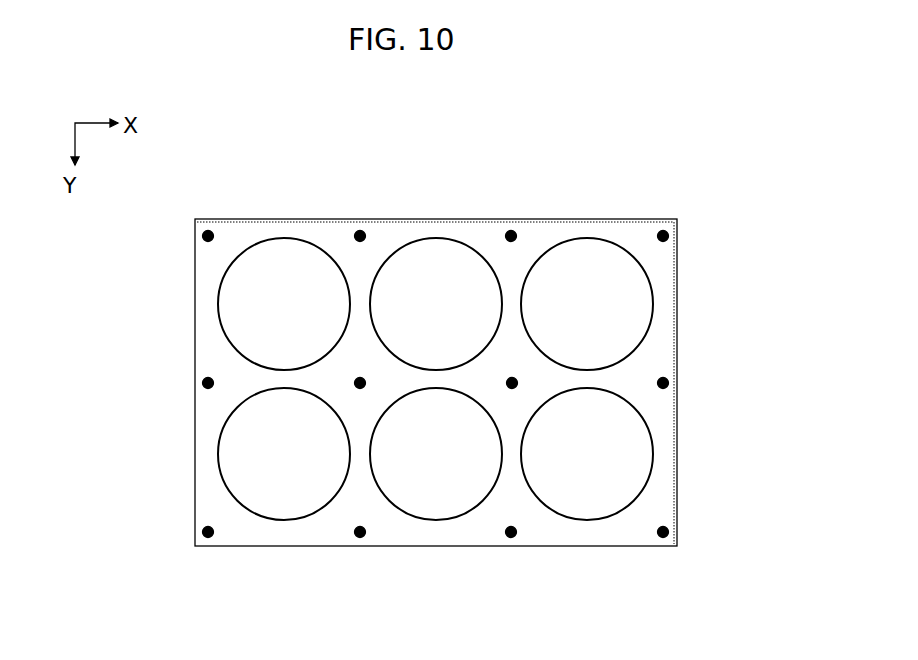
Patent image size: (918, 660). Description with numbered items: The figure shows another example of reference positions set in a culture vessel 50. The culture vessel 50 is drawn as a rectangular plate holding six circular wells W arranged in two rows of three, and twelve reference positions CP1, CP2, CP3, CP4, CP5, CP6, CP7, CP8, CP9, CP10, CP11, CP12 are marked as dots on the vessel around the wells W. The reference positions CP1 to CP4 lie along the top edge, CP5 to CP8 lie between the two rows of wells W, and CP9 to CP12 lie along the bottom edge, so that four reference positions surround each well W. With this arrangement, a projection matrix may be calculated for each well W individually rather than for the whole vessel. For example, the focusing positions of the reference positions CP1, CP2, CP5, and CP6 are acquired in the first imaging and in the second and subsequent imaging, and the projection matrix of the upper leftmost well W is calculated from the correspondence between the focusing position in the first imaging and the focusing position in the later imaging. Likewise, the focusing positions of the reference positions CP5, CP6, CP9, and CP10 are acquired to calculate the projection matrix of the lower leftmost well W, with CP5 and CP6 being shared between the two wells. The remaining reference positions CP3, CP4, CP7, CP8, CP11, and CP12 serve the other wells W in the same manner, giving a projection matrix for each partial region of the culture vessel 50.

The culture vessel 50 is at (232, 546).
The well W is at (284, 238).
The reference position CP1 is at (208, 231).
The reference position CP2 is at (360, 231).
The reference position CP3 is at (511, 231).
The reference position CP4 is at (663, 231).
The reference position CP5 is at (203, 383).
The reference position CP6 is at (360, 383).
The reference position CP7 is at (512, 383).
The reference position CP8 is at (668, 383).
The reference position CP9 is at (203, 532).
The reference position CP10 is at (363, 536).
The reference position CP11 is at (514, 536).
The reference position CP12 is at (668, 532).